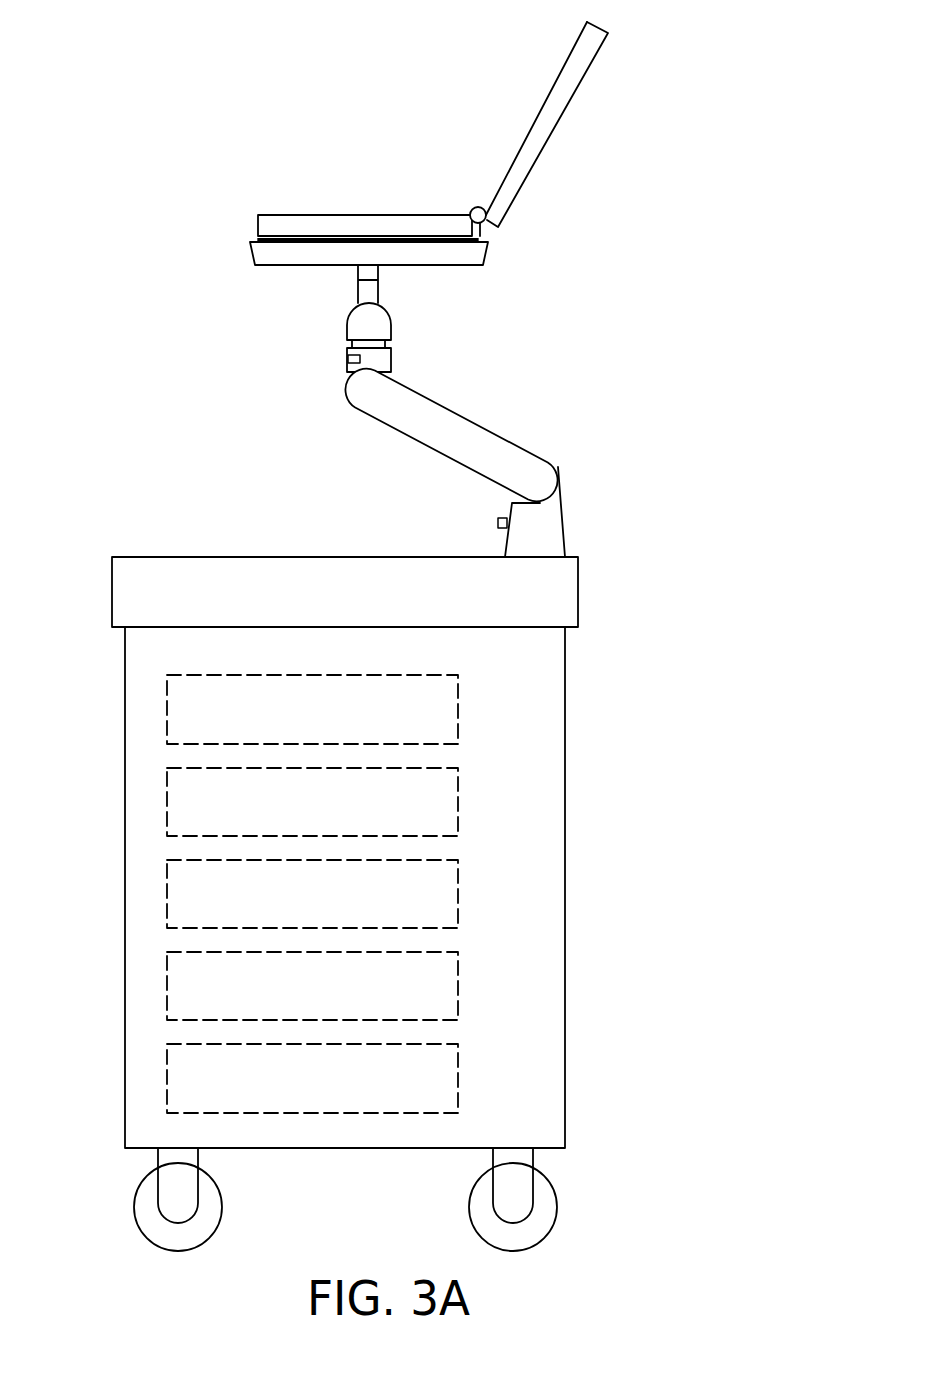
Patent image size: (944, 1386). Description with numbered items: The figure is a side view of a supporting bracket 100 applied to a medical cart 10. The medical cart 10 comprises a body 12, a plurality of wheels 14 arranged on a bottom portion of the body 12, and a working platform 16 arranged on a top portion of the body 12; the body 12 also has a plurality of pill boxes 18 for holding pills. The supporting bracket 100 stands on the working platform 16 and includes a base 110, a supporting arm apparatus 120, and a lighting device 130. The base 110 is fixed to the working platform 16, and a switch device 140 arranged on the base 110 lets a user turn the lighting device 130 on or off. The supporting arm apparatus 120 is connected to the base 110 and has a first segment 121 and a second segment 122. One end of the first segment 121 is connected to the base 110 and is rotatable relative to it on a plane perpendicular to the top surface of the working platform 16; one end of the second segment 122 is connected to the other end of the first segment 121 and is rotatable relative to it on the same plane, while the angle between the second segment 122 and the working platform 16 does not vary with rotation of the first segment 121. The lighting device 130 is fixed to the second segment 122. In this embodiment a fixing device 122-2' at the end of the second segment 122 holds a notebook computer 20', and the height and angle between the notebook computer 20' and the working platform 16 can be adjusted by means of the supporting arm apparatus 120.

The medical cart 10 is at (731, 115).
The supporting bracket 100 is at (665, 217).
The body 12 is at (545, 865).
The wheels 14 is at (547, 1203).
The working platform 16 is at (555, 593).
The pill boxes 18 is at (167, 722).
The notebook computer 20' is at (433, 131).
The base 110 is at (552, 522).
The supporting arm apparatus 120 is at (584, 280).
The first segment 121 is at (443, 425).
The second segment 122 is at (449, 308).
The fixing device 122-2' is at (421, 254).
The lighting device 130 is at (347, 365).
The switch device 140 is at (498, 523).